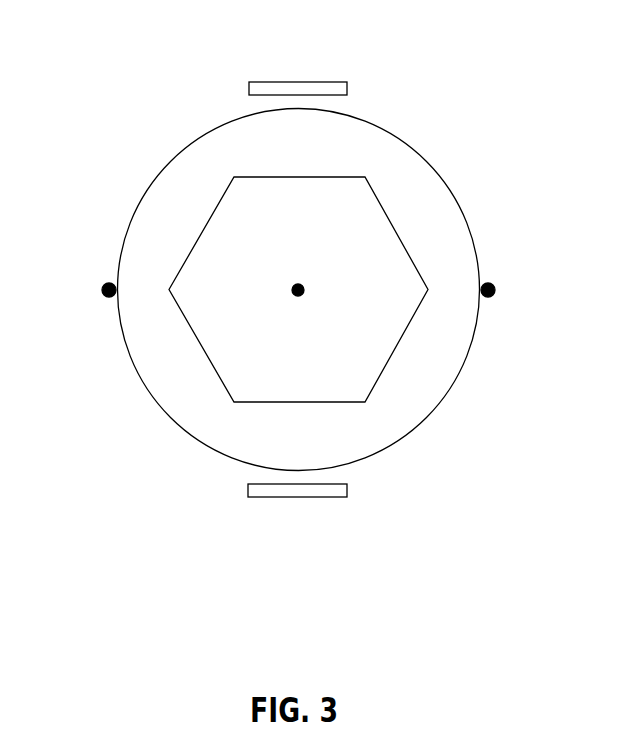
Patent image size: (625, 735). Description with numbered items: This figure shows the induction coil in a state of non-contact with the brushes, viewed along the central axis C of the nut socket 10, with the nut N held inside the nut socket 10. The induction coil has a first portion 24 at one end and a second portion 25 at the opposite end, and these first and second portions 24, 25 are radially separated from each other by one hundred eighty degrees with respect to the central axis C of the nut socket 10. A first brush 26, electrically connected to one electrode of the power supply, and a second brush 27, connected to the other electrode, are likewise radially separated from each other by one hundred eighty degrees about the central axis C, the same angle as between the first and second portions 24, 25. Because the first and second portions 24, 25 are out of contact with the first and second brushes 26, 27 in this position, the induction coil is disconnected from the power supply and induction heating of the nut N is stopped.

The nut socket 10 is at (442, 383).
The nut N is at (338, 265).
The central axis C is at (297, 298).
The first portion 24 is at (102, 287).
The second portion 25 is at (495, 290).
The first brush 26 is at (328, 79).
The second brush 27 is at (328, 498).